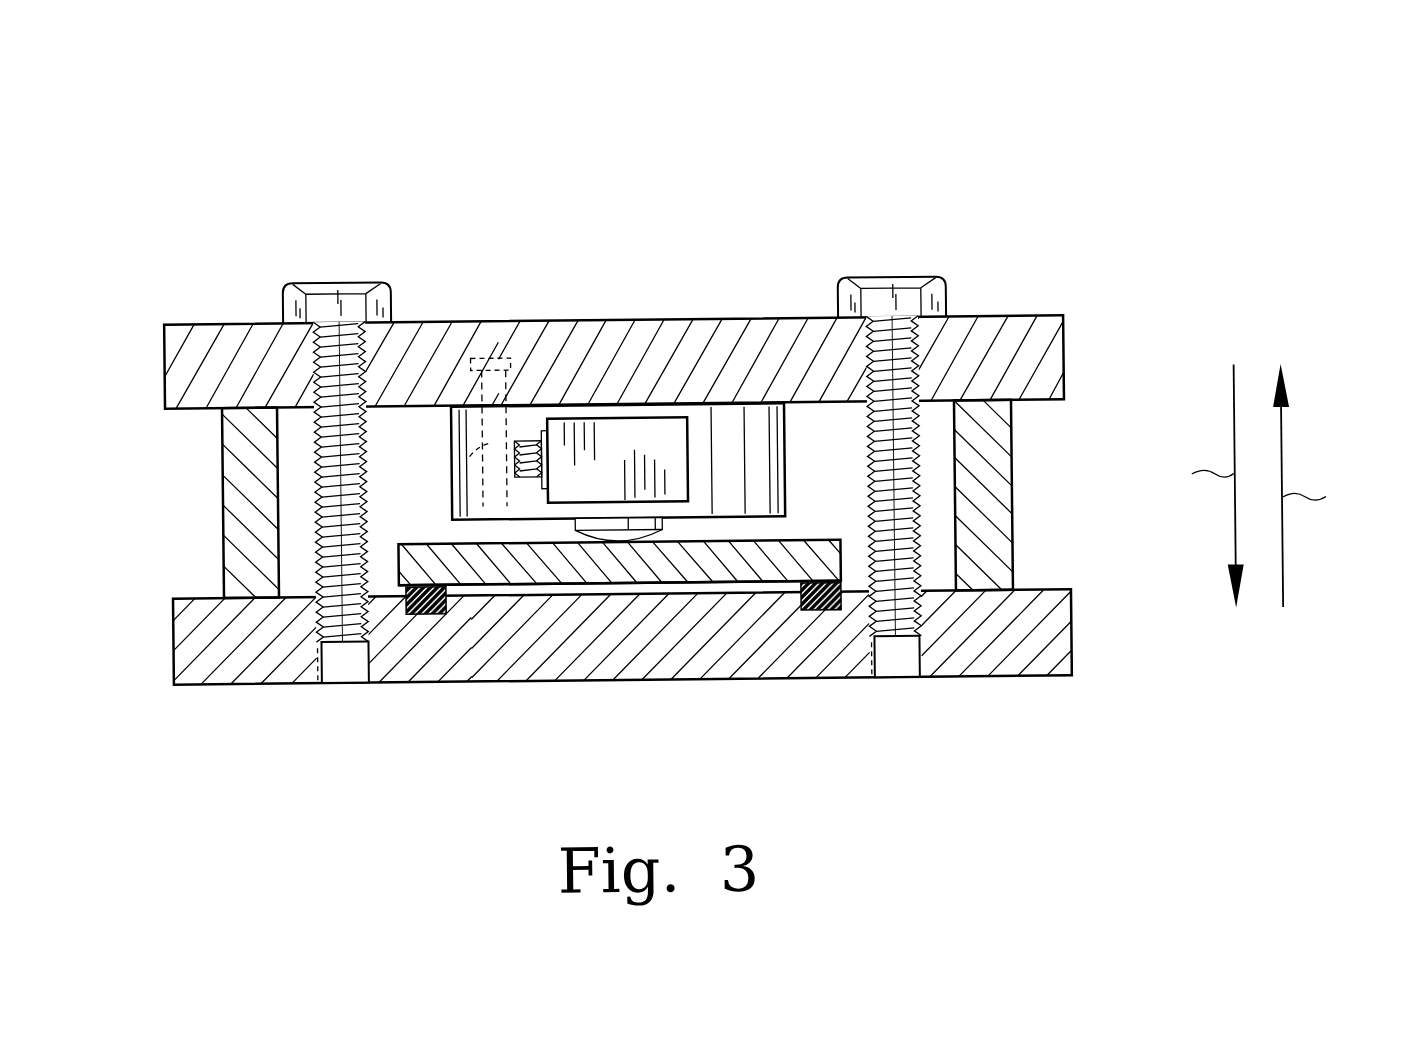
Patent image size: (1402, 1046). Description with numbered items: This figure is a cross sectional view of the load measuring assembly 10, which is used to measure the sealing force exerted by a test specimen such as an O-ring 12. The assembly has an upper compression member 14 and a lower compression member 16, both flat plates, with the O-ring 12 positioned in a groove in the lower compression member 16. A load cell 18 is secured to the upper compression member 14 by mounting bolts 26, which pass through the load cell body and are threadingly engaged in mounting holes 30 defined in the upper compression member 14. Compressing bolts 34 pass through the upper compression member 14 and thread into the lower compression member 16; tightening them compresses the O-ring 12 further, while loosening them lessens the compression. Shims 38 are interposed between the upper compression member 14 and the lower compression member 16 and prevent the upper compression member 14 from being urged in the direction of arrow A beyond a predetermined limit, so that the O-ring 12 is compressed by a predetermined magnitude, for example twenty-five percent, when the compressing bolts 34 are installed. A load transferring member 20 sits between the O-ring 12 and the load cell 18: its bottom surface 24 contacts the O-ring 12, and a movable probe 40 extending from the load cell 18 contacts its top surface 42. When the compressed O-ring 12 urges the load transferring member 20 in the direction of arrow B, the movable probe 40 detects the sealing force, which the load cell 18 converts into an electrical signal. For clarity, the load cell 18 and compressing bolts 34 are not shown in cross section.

The load measuring assembly 10 is at (806, 139).
The O-ring 12 is at (363, 681).
The upper compression member 14 is at (1060, 360).
The lower compression member 16 is at (1060, 625).
The load cell 18 is at (625, 373).
The load transferring member 20 is at (560, 567).
The bottom surface 24 is at (448, 612).
The mounting bolts 26 is at (472, 452).
The mounting holes 30 is at (486, 357).
The compressing bolts 34 is at (337, 289).
The shims 38 is at (229, 488).
The movable probe 40 is at (618, 542).
The top surface 42 is at (800, 544).